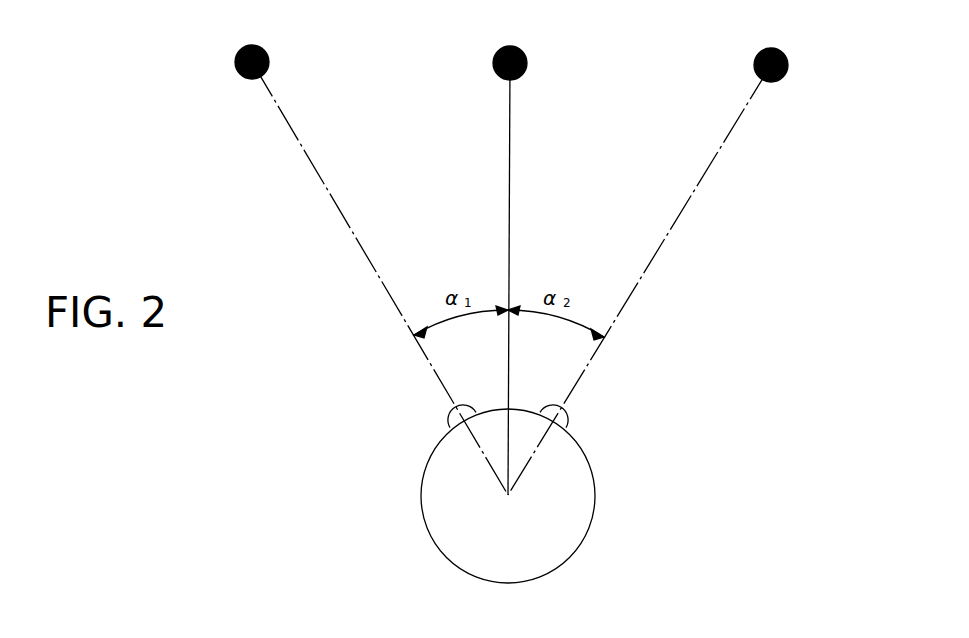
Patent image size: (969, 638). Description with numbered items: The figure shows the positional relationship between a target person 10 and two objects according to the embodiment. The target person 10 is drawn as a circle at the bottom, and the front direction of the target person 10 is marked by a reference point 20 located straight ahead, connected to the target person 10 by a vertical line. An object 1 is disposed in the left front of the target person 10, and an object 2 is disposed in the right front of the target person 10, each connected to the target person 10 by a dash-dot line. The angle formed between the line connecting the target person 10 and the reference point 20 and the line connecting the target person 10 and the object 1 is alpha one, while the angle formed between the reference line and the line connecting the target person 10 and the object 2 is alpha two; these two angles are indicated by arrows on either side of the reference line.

The object 1 is at (269, 60).
The object 2 is at (788, 63).
The reference point 20 is at (527, 61).
The target person 10 is at (595, 494).